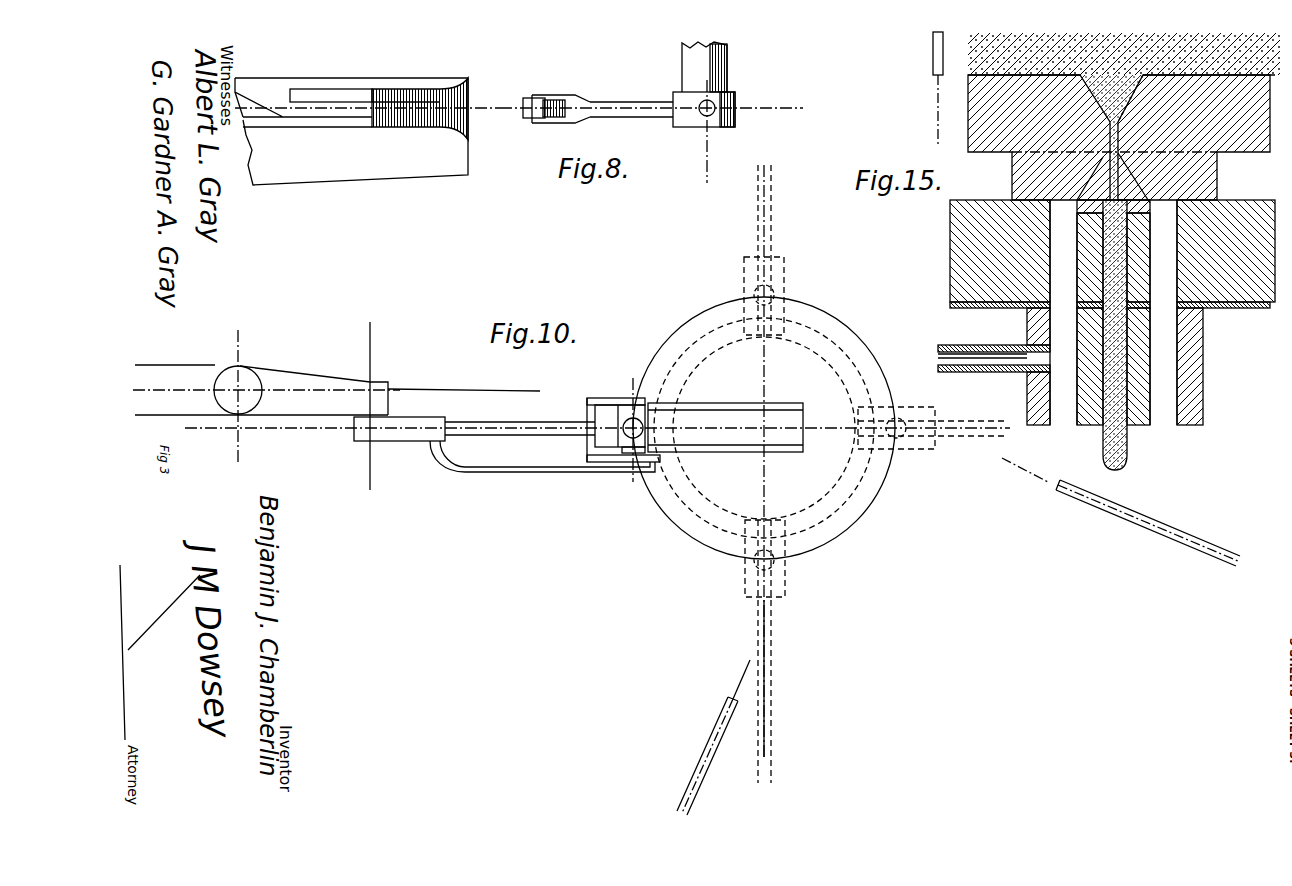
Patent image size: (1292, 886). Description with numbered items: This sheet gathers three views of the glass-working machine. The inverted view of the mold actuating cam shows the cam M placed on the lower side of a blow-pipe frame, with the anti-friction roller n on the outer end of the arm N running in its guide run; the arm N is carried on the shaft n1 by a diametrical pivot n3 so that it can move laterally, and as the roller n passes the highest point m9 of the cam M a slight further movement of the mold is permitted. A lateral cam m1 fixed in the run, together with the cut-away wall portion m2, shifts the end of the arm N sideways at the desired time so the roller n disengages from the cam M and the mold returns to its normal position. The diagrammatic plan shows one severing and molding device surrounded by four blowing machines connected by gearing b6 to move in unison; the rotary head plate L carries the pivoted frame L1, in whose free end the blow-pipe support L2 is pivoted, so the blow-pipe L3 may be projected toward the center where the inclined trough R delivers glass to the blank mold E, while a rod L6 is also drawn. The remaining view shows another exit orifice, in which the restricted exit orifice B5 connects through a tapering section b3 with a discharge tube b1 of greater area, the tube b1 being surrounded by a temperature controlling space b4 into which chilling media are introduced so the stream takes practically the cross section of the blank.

In FIG. 8, the cut-away portion of the cam run wall m2 is at (277, 92).
In FIG. 8, the mold actuating cam M is at (408, 108).
In FIG. 8, the lateral cam m1 is at (260, 117).
In FIG. 8, the highest point of the cam m9 is at (385, 122).
In FIG. 8, the anti-friction roller n is at (540, 100).
In FIG. 8, the arm N is at (622, 100).
In FIG. 8, the shaft n1 is at (712, 75).
In FIG. 8, the diametrical pivot n3 is at (710, 112).
In FIG. 10, the rotary head plate L is at (183, 383).
In FIG. 10, the blow-pipe frame L1 is at (278, 385).
In FIG. 10, the blow-pipe support L2 is at (410, 428).
In FIG. 10, the blow-pipe L3 is at (520, 432).
In FIG. 15, the blow-pipe L3 is at (933, 52).
In FIG. 10, the blank mold E is at (605, 408).
In FIG. 10, the inclined trough R is at (712, 412).
In FIG. 10, the gearing b6 is at (697, 493).
In FIG. 10, the rod L6 is at (767, 720).
In FIG. 15, the exit orifice B5 is at (1118, 170).
In FIG. 15, the tapering section b3 is at (1105, 203).
In FIG. 15, the temperature controlling space b4 is at (1068, 322).
In FIG. 15, the discharge tube b1 is at (1135, 375).